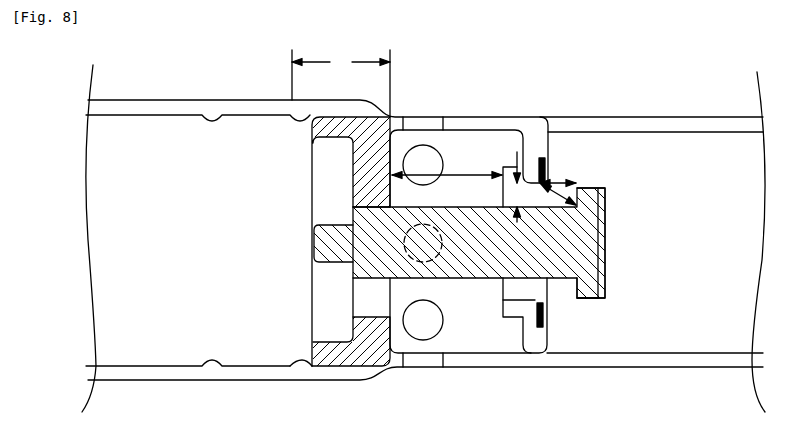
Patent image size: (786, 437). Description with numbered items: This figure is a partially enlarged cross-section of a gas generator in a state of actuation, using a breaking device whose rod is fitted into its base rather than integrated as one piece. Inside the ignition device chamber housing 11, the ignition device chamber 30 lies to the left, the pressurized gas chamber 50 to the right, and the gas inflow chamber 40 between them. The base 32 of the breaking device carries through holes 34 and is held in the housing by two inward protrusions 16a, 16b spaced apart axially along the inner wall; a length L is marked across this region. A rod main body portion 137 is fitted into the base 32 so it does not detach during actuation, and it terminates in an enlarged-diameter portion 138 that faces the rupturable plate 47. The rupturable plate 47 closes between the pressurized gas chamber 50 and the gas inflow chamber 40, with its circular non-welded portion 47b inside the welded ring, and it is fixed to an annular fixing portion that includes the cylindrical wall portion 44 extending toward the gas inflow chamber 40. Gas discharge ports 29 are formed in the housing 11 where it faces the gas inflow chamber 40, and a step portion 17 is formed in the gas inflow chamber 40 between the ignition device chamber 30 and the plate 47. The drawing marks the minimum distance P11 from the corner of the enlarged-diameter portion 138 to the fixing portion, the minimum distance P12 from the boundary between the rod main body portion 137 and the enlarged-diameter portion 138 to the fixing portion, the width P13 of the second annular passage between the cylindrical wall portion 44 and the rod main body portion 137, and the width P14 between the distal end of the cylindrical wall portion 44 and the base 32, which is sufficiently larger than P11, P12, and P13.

The ignition device chamber housing 11 is at (208, 99).
The step portion 17 is at (362, 373).
The protrusion 16a is at (212, 361).
The protrusion 16b is at (302, 361).
The gas discharge port 29 is at (432, 115).
The ignition device chamber 30 is at (170, 264).
The base 32 is at (324, 356).
The through hole 34 is at (353, 299).
The gas inflow chamber 40 is at (481, 333).
The cylindrical wall portion 44 is at (513, 312).
The rupturable plate 47 is at (545, 320).
The non-welded portion 47b is at (607, 230).
The pressurized gas chamber 50 is at (717, 270).
The rod main body portion 137 is at (444, 270).
The enlarged-diameter portion 138 is at (590, 300).
The length L is at (341, 75).
The minimum distance P11 is at (552, 182).
The minimum distance P12 is at (557, 206).
The width P13 is at (503, 203).
The width P14 is at (481, 175).